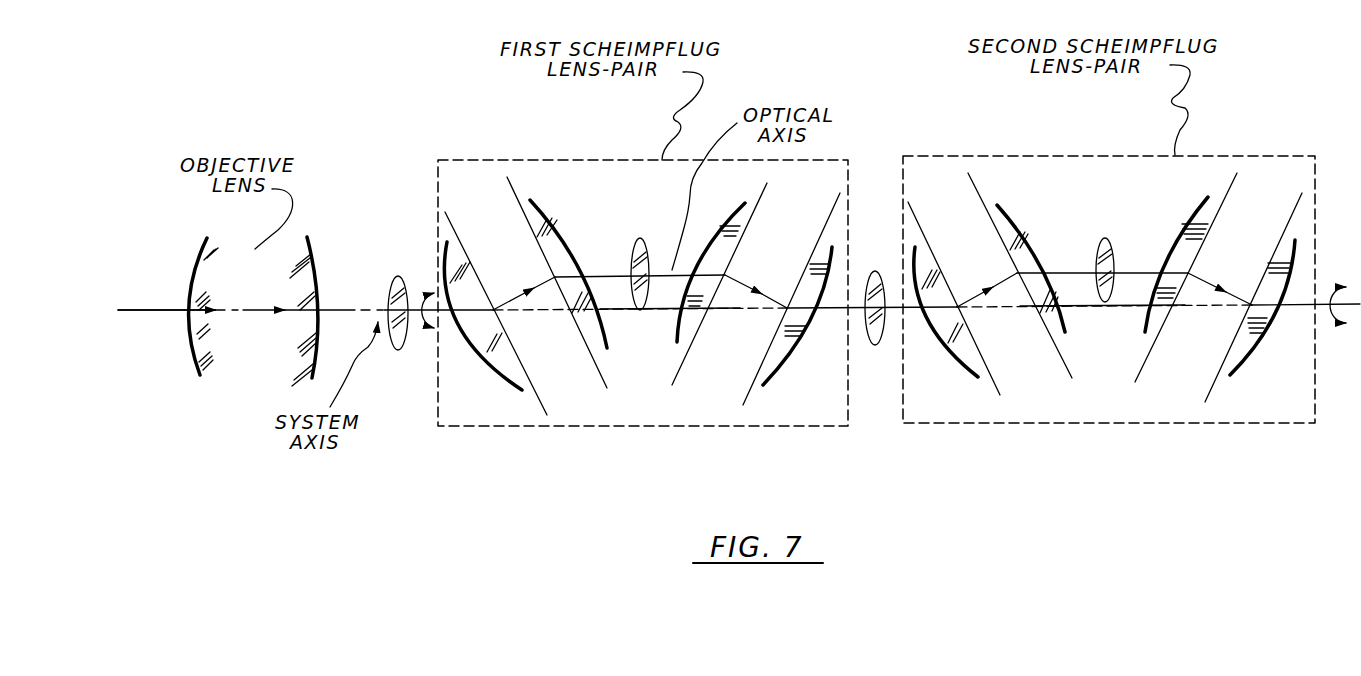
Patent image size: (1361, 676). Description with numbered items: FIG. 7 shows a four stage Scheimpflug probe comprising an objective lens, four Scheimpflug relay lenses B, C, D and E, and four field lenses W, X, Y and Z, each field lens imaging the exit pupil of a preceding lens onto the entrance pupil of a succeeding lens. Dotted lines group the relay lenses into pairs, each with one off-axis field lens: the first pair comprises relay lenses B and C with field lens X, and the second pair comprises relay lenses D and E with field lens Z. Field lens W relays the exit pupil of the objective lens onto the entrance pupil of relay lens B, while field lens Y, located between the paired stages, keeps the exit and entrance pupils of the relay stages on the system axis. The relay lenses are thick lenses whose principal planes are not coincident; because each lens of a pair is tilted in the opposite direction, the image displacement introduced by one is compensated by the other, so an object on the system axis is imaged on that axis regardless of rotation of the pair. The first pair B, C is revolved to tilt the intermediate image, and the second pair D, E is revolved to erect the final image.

The Scheimpflug relay lens B is at (488, 205).
The Scheimpflug relay lens C is at (818, 207).
The Scheimpflug relay lens D is at (952, 208).
The Scheimpflug relay lens E is at (1270, 207).
The field lens W is at (398, 290).
The field lens X is at (645, 248).
The field lens Y is at (874, 272).
The field lens Z is at (1106, 247).